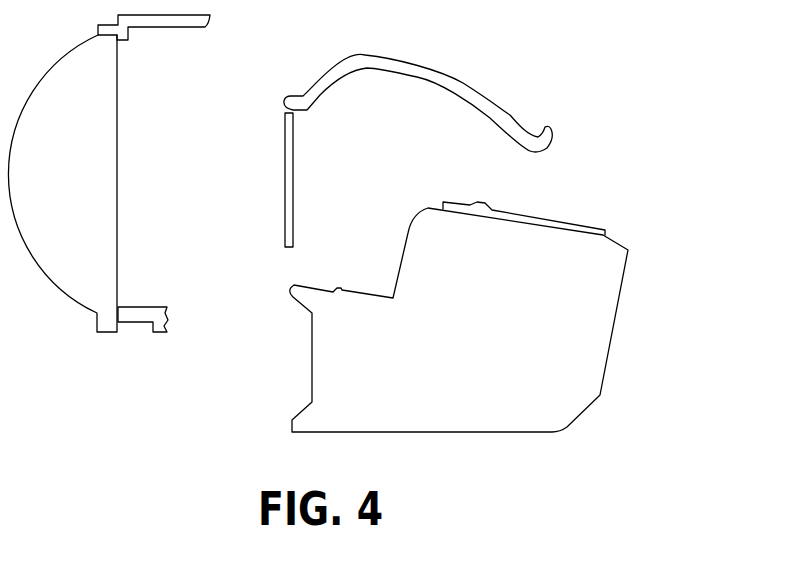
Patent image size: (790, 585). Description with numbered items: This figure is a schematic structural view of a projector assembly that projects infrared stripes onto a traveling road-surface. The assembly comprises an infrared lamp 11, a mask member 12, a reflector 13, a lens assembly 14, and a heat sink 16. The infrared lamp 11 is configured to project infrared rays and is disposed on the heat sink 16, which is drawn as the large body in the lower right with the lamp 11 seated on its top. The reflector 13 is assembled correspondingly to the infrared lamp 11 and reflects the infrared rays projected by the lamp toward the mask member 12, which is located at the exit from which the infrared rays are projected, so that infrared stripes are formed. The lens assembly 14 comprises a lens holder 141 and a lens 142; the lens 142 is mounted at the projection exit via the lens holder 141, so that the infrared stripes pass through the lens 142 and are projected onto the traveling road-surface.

The infrared lamp 11 is at (522, 214).
The mask member 12 is at (285, 165).
The reflector 13 is at (460, 83).
The lens assembly 14 is at (111, 173).
The lens holder 141 is at (127, 307).
The lens 142 is at (118, 233).
The heat sink 16 is at (445, 417).